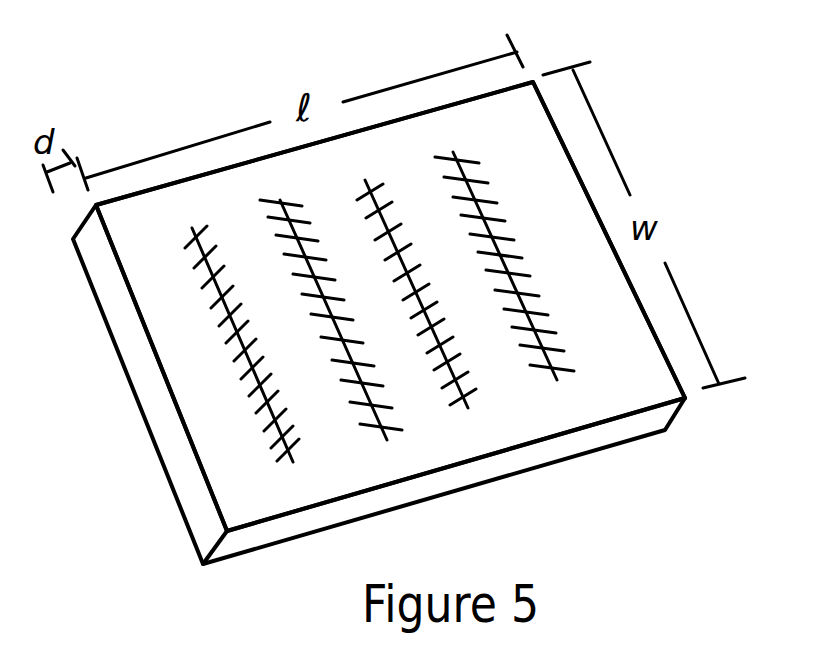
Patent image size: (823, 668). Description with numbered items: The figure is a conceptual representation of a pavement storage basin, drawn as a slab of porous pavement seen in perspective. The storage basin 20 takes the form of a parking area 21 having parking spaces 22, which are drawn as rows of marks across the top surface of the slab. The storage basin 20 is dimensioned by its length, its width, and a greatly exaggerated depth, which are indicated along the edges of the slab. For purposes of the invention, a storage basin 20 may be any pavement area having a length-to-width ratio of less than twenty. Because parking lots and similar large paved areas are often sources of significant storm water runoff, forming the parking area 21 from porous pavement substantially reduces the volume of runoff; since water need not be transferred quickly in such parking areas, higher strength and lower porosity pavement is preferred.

The storage basin 20 is at (592, 165).
The parking area 21 is at (630, 356).
The parking spaces 22 is at (573, 380).